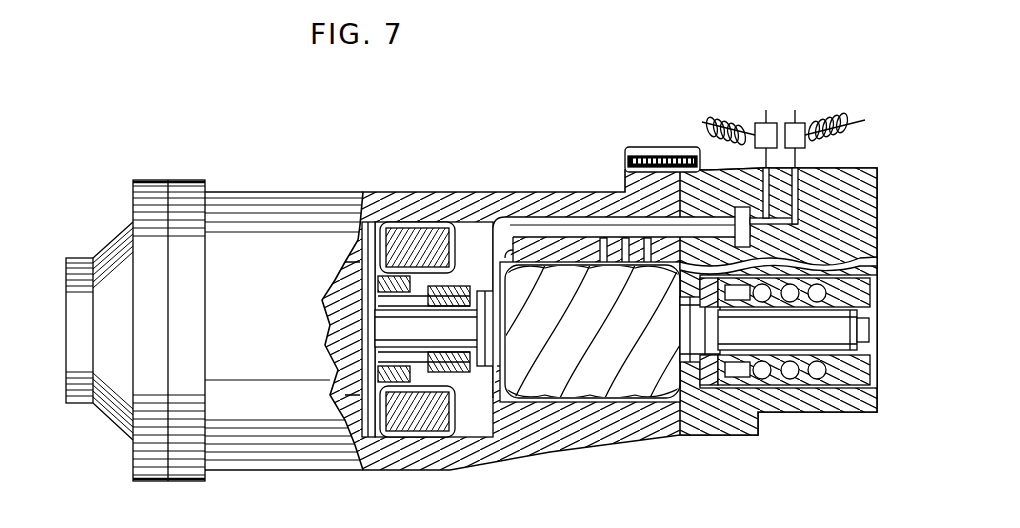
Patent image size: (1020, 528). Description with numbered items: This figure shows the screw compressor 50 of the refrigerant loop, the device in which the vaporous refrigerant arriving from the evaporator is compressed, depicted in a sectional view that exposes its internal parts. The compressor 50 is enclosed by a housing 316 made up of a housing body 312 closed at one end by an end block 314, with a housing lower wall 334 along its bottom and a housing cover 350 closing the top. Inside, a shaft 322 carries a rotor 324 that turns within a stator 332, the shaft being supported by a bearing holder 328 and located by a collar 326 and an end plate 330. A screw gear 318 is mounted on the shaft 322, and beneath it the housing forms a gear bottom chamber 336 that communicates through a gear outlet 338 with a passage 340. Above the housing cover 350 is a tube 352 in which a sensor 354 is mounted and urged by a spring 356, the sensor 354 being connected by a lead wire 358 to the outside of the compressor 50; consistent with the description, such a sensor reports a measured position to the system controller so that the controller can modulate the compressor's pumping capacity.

The compressor 50 is at (271, 188).
The housing body 312 is at (282, 307).
The end block 314 is at (730, 436).
The housing 316 is at (599, 344).
The screw gear 318 is at (602, 347).
The shaft 322 is at (437, 339).
The rotor 324 is at (343, 372).
The collar 326 is at (186, 180).
The bearing holder 328 is at (370, 193).
The end plate 330 is at (343, 262).
The stator 332 is at (478, 225).
The housing lower wall 334 is at (480, 400).
The gear bottom chamber 336 is at (562, 399).
The gear outlet 338 is at (675, 390).
The passage 340 is at (877, 258).
The housing cover 350 is at (524, 226).
The tube 352 is at (602, 232).
The sensor 354 is at (624, 212).
The spring 356 is at (732, 167).
The lead wire 358 is at (713, 163).